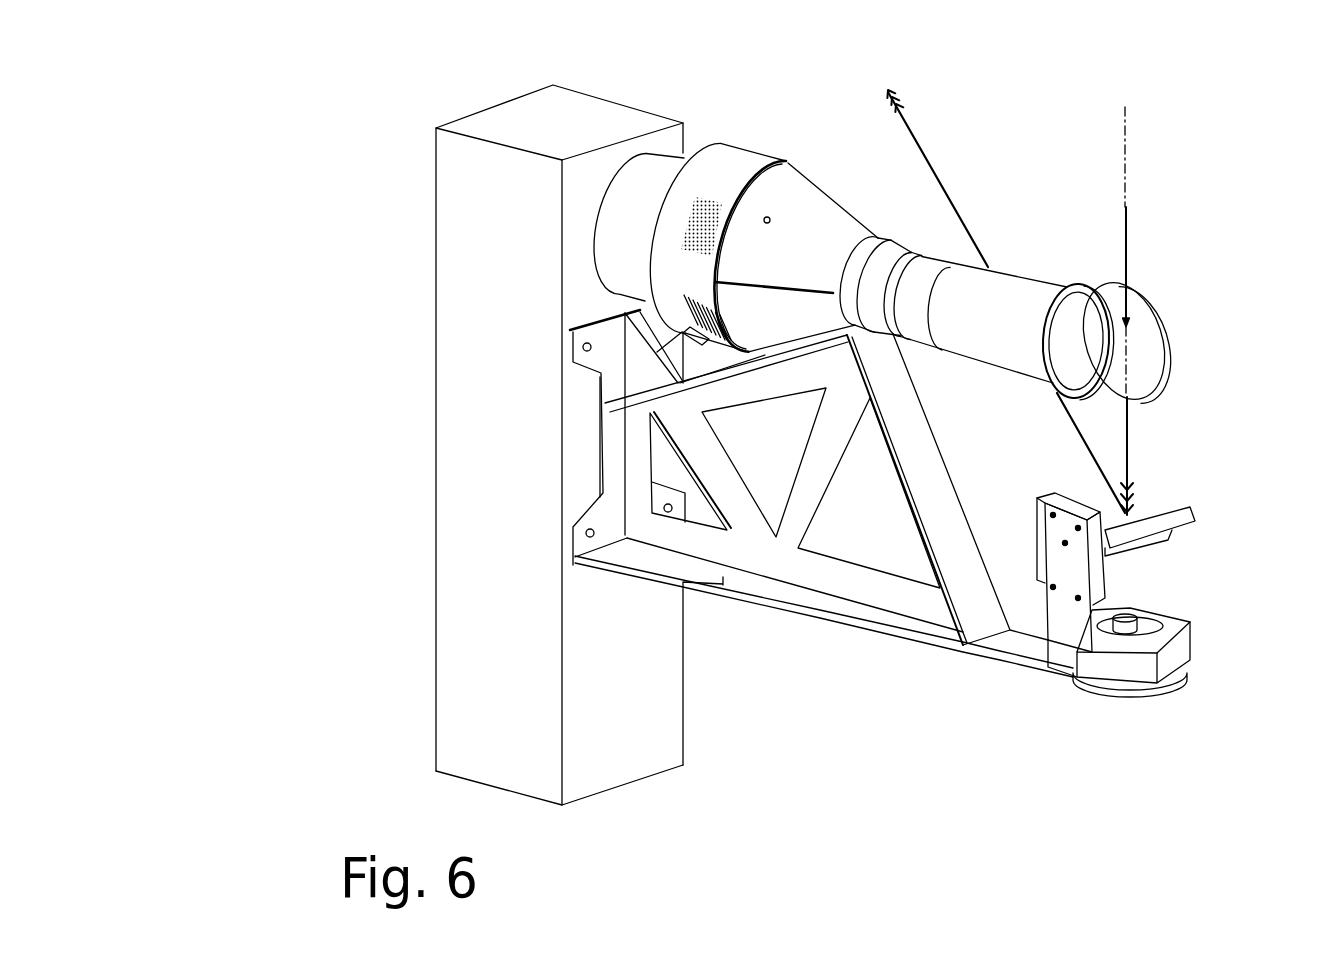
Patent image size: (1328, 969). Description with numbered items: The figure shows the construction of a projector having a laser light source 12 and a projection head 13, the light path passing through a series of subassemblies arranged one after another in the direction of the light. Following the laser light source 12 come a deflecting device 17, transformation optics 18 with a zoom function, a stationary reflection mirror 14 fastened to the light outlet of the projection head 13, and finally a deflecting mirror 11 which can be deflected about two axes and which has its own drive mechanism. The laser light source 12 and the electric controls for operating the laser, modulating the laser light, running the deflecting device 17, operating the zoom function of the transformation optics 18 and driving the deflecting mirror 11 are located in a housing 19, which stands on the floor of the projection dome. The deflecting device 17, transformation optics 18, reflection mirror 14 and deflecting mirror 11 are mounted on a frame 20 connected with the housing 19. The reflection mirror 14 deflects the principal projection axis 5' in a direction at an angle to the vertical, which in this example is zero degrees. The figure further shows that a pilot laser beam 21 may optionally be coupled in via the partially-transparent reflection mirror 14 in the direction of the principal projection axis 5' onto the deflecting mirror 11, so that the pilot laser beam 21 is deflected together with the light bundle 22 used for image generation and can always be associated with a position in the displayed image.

The principal projection axis 5' is at (1188, 149).
The deflecting mirror 11 is at (1193, 520).
The laser light source 12 is at (460, 200).
The projection head 13 is at (747, 130).
The reflection mirror 14 is at (1150, 316).
The deflecting device 17 is at (753, 162).
The transformation optics 18 is at (1015, 283).
The housing 19 is at (435, 410).
The frame 20 is at (737, 613).
The pilot laser beam 21 is at (905, 112).
The light bundle 22 is at (1080, 347).